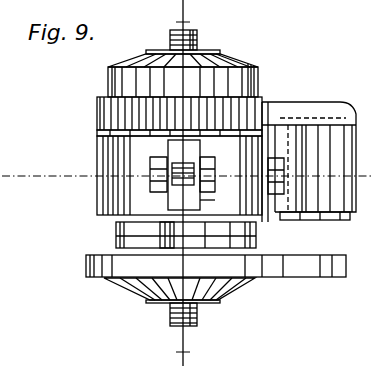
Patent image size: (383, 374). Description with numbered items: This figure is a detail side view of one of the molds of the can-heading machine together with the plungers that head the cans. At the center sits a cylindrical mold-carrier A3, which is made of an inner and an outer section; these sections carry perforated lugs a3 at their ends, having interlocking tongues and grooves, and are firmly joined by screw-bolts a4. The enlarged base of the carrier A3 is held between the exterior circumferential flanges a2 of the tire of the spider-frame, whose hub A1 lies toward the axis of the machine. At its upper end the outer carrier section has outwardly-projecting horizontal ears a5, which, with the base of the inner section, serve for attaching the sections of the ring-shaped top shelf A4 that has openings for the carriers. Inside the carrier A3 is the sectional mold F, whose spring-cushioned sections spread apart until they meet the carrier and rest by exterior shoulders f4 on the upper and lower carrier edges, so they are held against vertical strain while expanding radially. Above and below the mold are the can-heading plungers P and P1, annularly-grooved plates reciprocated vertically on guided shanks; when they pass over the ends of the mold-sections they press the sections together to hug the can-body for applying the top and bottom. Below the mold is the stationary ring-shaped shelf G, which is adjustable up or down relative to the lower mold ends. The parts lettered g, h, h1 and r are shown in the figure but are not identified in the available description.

The shaft end g is at (180, 185).
The upper hub h is at (198, 40).
The can-heading plunger P is at (276, 78).
The ring-shaped shelf A4 is at (338, 100).
The hub A1 is at (309, 162).
The exterior circumferential flanges a2 is at (330, 221).
The outwardly-projecting horizontal ears a5 is at (108, 134).
The cylindrical mold-carrier A3 is at (50, 178).
The screw-bolts a4 is at (205, 175).
The perforated lugs a3 is at (208, 208).
The sectional mold F is at (116, 237).
The roller r is at (162, 235).
The exterior shoulders f4 is at (200, 235).
The stationary ring-shaped shelf G is at (86, 266).
The can-heading plunger P1 is at (179, 302).
The lower hub h1 is at (170, 316).